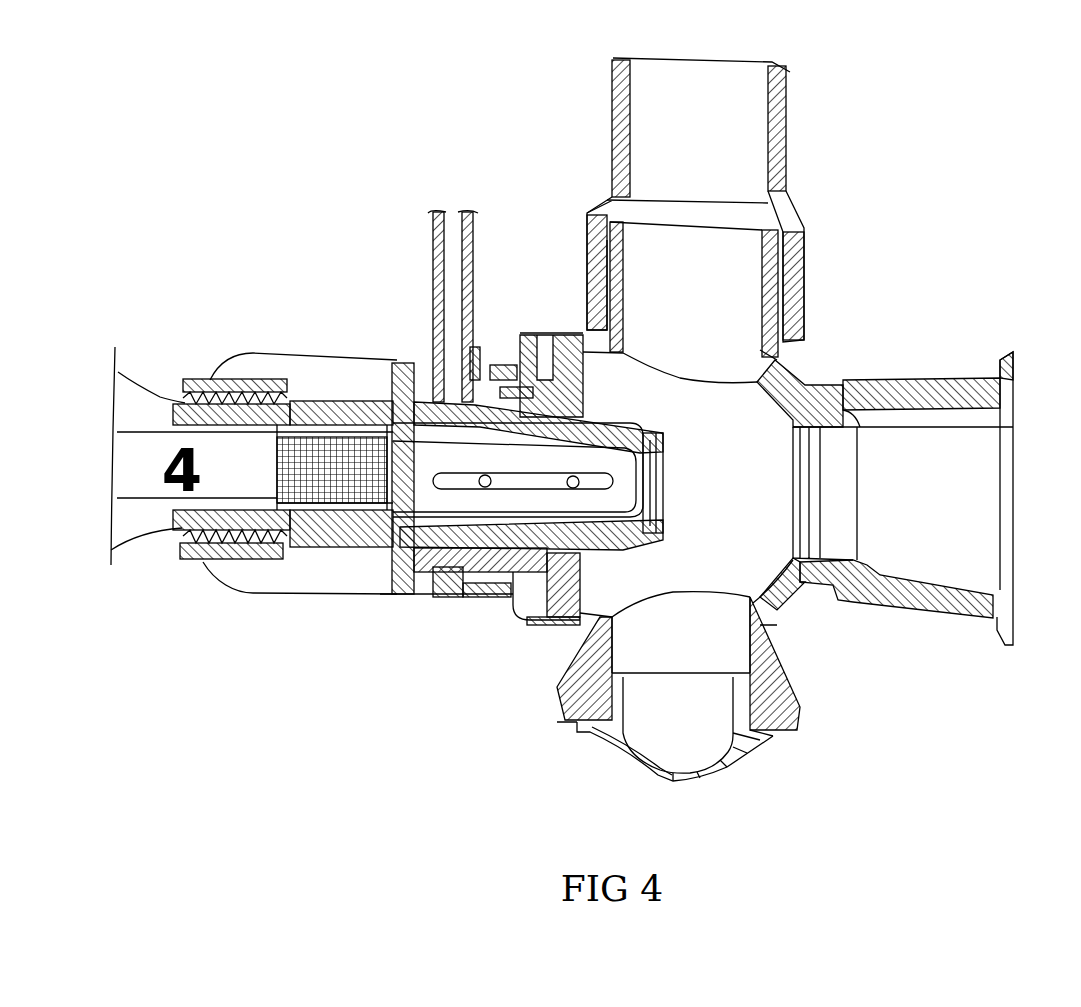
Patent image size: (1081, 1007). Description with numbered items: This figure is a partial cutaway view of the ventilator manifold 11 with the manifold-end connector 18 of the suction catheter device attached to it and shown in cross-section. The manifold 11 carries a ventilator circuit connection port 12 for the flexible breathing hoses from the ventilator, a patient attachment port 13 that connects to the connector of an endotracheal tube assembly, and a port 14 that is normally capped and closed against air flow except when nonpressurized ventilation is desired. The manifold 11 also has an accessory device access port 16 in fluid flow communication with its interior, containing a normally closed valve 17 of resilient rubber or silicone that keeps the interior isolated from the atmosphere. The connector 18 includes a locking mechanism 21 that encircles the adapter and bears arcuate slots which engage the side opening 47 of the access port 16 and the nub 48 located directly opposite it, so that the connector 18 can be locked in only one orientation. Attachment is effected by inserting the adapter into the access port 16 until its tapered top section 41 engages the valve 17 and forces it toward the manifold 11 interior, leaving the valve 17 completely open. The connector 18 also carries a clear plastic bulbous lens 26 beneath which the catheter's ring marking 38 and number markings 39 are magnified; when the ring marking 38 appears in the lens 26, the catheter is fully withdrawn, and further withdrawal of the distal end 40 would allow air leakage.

The manifold 11 is at (845, 633).
The ventilator circuit connection port 12 is at (824, 258).
The patient attachment port 13 is at (930, 357).
The port 14 is at (810, 712).
The accessory device access port 16 is at (500, 622).
The normally closed valve 17 is at (620, 402).
The manifold-end connector 18 is at (256, 605).
The locking mechanism 21 is at (368, 611).
The bulbous lens 26 is at (325, 445).
The ring marking 38 is at (347, 437).
The number markings 39 is at (178, 466).
The distal end 40 is at (640, 478).
The tapered top section 41 is at (638, 535).
The side opening 47 is at (480, 380).
The nub 48 is at (447, 600).